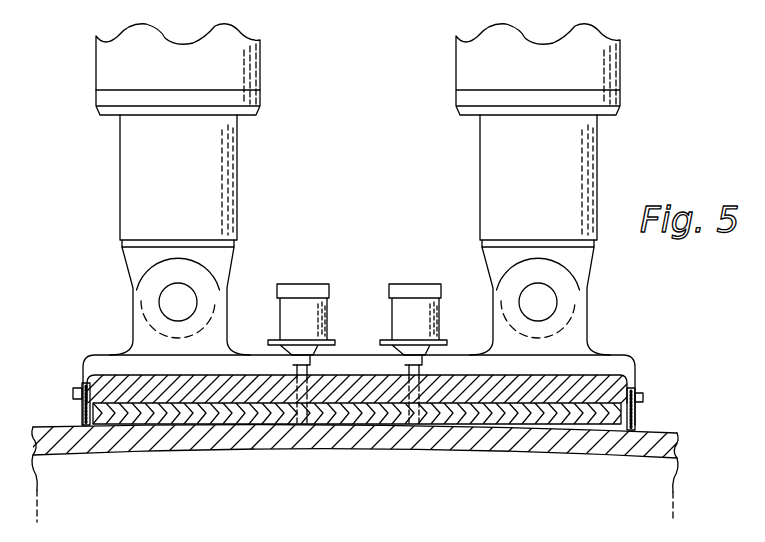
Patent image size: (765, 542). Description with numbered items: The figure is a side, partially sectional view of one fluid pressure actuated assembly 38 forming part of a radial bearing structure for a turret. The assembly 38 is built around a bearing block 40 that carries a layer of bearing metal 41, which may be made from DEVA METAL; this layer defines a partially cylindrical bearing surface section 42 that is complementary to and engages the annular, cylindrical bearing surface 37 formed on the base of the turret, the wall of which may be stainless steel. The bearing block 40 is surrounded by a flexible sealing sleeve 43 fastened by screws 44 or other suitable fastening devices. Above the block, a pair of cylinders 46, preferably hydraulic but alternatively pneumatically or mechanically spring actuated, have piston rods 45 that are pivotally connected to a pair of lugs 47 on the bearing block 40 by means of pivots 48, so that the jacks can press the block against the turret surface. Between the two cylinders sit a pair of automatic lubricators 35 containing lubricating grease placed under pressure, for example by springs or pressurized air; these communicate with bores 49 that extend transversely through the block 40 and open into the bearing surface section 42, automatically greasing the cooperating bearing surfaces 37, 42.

The automatic lubricators 35 is at (388, 292).
The bearing surface 37 is at (652, 440).
The fluid pressure actuated assembly 38 is at (96, 88).
The bearing block 40 is at (612, 368).
The layer of bearing metal 41 is at (536, 415).
The bearing surface section 42 is at (447, 425).
The flexible sealing sleeve 43 is at (82, 420).
The screws 44 is at (76, 390).
The piston rods 45 is at (234, 182).
The cylinders 46 is at (260, 68).
The lugs 47 is at (133, 328).
The pivots 48 is at (165, 300).
The bores 49 is at (293, 400).